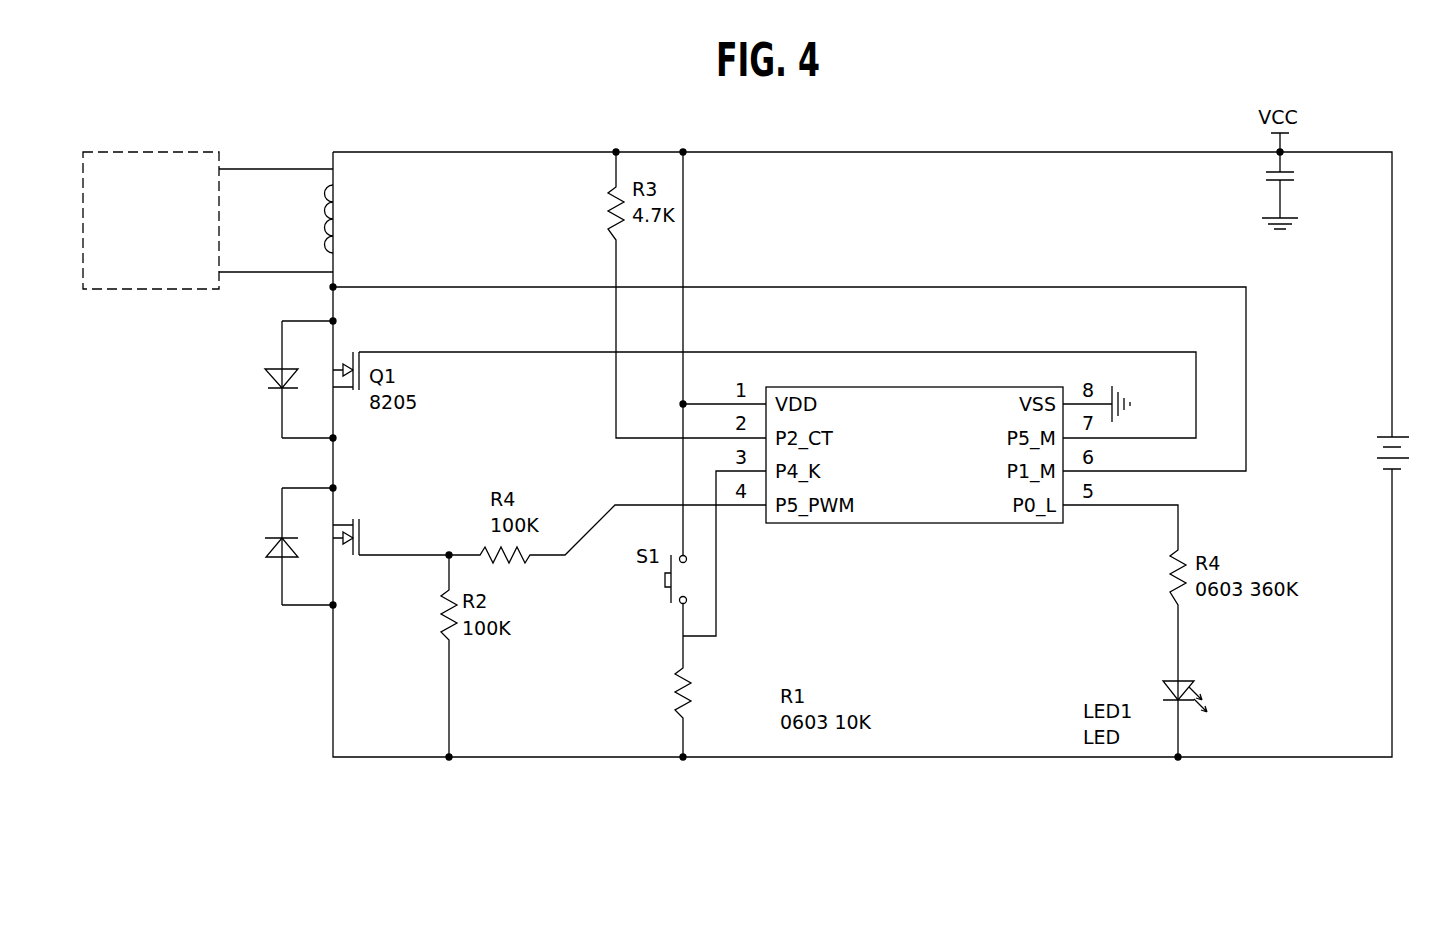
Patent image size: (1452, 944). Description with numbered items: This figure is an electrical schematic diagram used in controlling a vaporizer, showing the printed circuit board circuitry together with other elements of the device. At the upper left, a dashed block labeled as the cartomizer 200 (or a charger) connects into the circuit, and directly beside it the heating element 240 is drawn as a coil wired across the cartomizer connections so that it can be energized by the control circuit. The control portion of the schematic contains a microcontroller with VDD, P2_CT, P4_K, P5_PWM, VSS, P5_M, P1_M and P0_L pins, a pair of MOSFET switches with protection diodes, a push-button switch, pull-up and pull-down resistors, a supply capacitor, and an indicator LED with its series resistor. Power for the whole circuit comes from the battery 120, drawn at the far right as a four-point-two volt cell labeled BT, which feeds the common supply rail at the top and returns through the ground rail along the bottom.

The cartomizer 200 is at (181, 139).
The heating element 240 is at (483, 222).
The battery 120 is at (1412, 401).